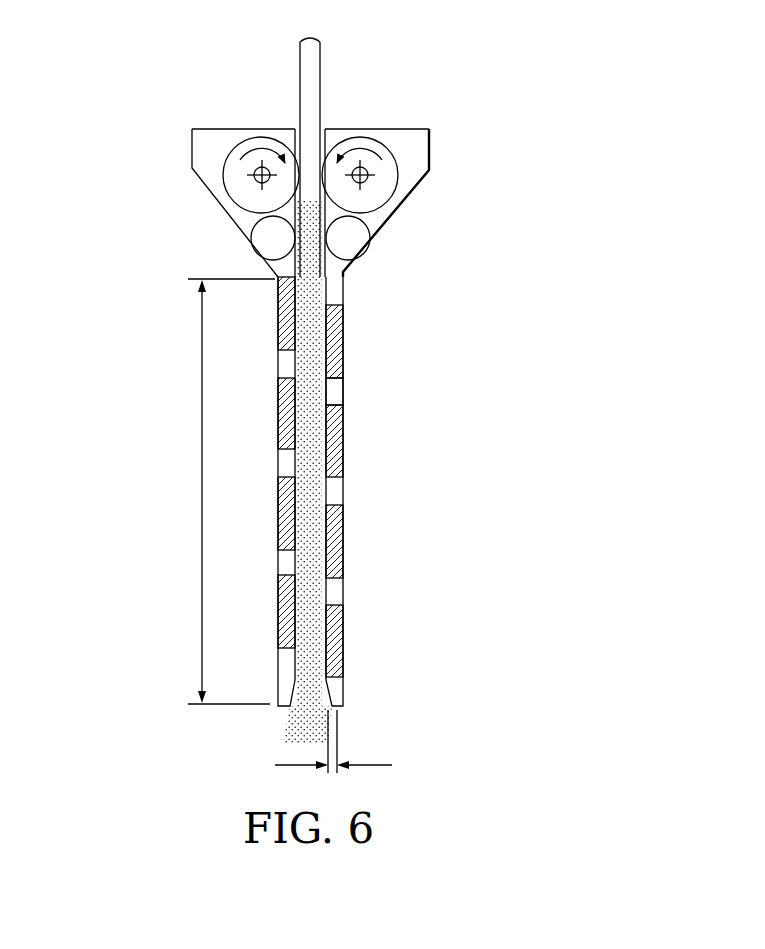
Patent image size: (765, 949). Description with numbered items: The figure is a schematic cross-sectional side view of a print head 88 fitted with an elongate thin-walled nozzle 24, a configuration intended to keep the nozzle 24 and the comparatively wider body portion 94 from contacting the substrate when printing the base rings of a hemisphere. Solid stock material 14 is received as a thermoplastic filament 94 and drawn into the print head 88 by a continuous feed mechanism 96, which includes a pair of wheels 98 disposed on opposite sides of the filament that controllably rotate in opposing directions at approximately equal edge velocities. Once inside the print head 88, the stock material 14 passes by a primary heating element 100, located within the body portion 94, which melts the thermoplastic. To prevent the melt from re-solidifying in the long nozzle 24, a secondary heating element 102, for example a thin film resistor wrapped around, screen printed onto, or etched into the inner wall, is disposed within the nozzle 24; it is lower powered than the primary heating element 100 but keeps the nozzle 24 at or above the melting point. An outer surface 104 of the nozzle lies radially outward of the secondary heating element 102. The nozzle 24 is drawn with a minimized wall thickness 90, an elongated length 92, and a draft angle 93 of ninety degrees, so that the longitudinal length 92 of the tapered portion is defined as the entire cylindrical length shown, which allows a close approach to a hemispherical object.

The solid stock material 14 is at (322, 89).
The nozzle 24 is at (406, 483).
The print head 88 is at (430, 146).
The wall thickness 90 is at (372, 765).
The length 92 is at (200, 491).
The draft angle 93 is at (252, 700).
The body portion 94 is at (243, 128).
The continuous feed mechanism 96 is at (221, 145).
The pair of wheels 98 is at (232, 204).
The primary heating element 100 is at (258, 247).
The secondary heating element 102 is at (344, 343).
The outer surface 104 is at (344, 393).